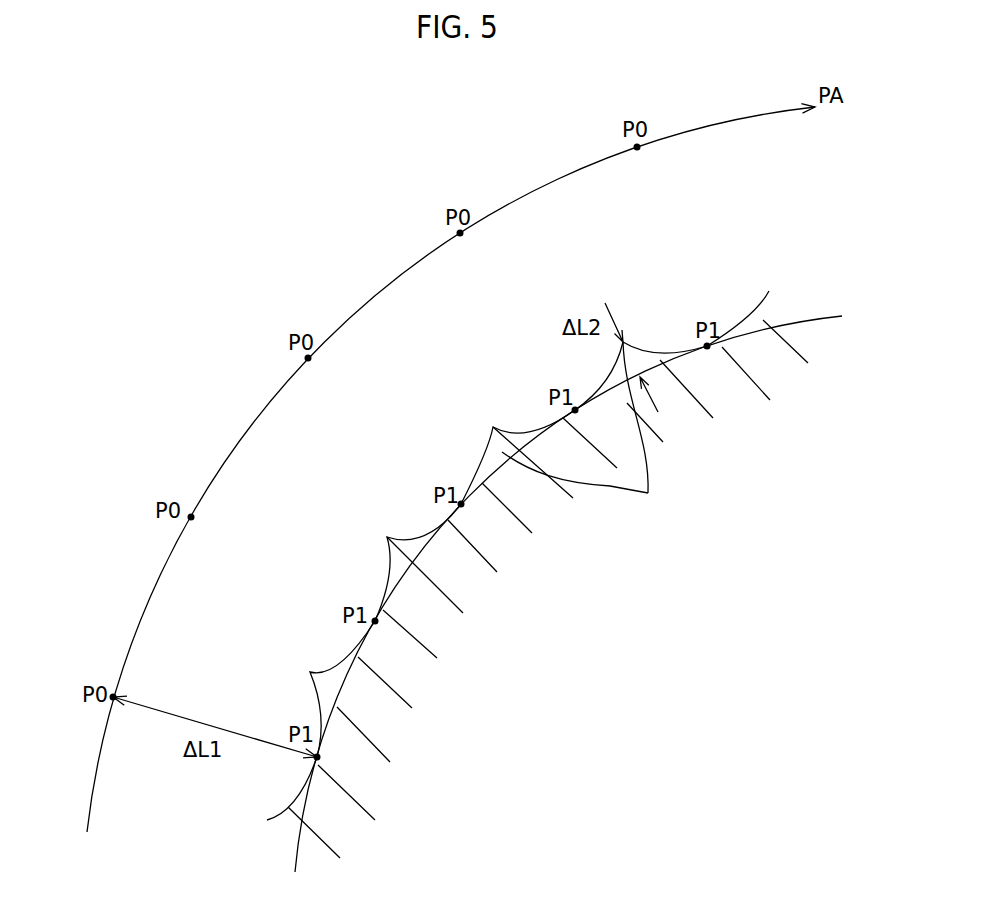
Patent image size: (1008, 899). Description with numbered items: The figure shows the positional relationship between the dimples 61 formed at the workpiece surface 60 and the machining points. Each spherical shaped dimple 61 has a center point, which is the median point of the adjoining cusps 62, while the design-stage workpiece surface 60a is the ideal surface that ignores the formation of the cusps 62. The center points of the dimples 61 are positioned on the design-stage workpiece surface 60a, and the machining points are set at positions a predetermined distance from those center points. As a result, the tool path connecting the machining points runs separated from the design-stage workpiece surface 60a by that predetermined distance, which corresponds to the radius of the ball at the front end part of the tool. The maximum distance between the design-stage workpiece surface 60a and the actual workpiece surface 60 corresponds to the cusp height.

The workpiece surface 60 is at (647, 336).
The design-stage workpiece surface 60a is at (832, 315).
The dimple 61 is at (765, 298).
The cusp 62 is at (584, 432).